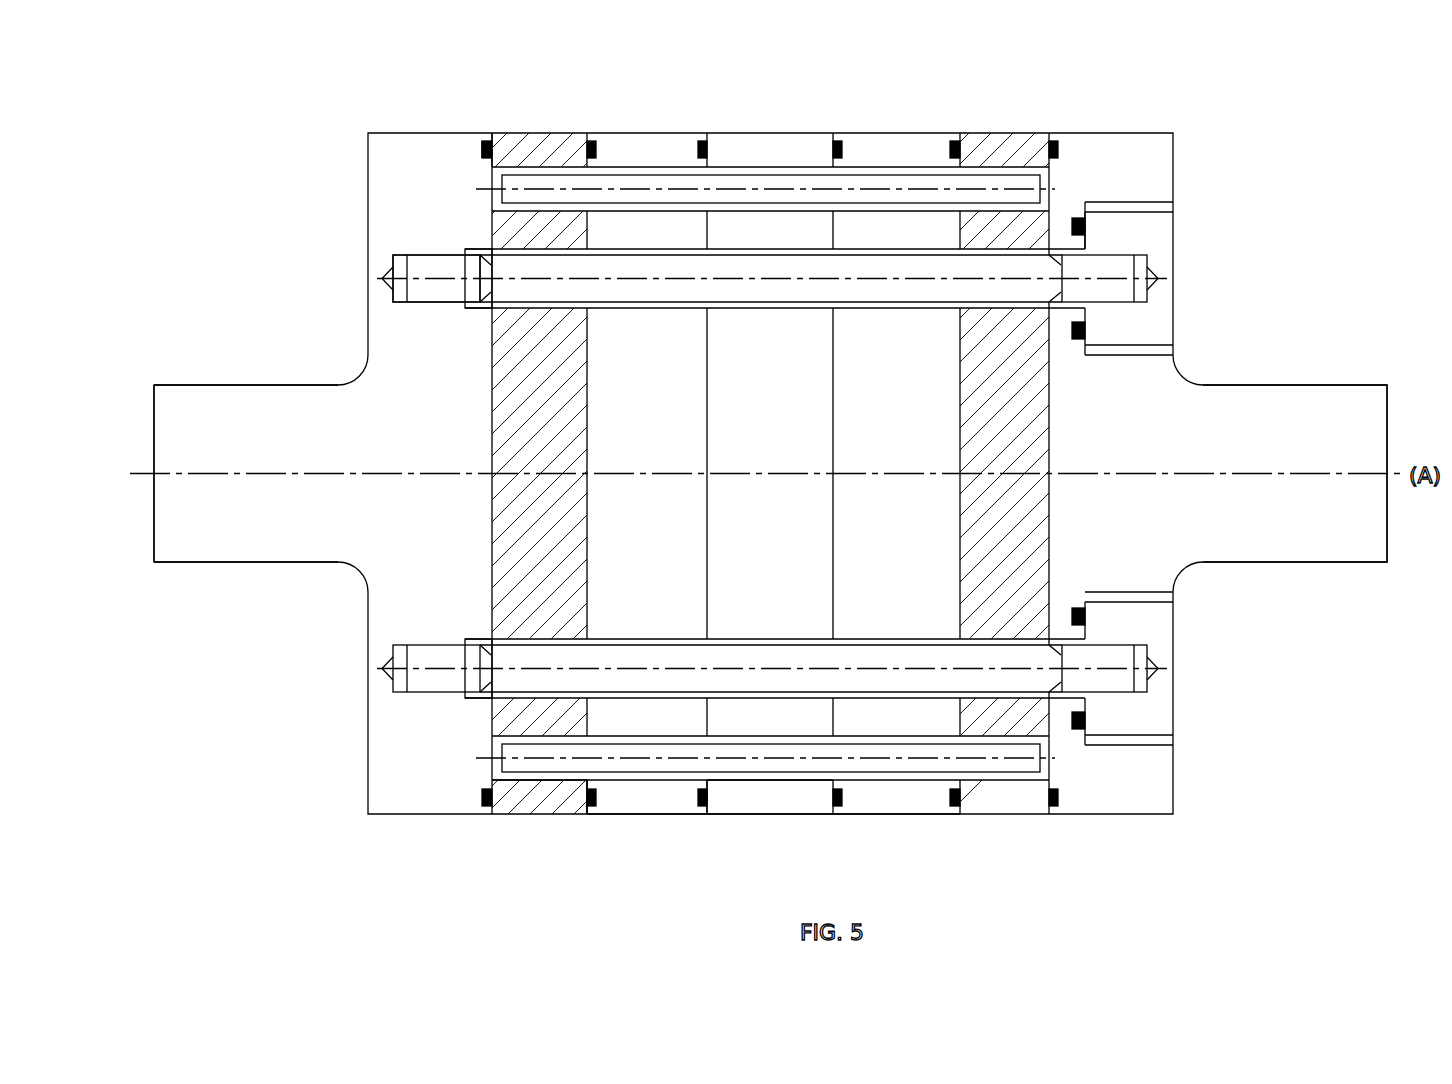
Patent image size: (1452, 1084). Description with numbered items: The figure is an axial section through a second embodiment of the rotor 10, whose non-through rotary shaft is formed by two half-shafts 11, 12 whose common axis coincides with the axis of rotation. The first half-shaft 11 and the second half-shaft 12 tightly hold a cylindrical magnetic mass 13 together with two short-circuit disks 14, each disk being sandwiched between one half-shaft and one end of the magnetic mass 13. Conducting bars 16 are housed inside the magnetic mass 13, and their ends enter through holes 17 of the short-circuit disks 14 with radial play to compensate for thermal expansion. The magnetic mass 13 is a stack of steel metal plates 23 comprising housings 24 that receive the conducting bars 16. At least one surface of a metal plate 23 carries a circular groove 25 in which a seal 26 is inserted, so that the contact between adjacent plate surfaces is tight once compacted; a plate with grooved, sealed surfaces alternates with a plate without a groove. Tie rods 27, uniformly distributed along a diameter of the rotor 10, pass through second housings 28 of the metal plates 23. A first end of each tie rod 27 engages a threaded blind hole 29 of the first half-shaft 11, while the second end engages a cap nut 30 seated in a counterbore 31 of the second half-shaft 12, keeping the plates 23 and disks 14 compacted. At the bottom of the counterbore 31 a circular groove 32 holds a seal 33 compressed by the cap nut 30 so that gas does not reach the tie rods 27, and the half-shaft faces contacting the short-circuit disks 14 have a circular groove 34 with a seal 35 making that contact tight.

The rotor 10 is at (1160, 95).
The first half-shaft 11 is at (280, 373).
The second half-shaft 12 is at (1318, 375).
The cylindrical magnetic mass 13 is at (857, 127).
The short-circuit disk 14 is at (547, 127).
The conducting bar 16 is at (913, 186).
The through hole 17 is at (527, 800).
The metal plate 23 is at (631, 822).
The housing 24 is at (778, 787).
The circular groove 25 is at (592, 817).
The seal 26 is at (603, 803).
The tie rod 27 is at (1047, 254).
The second housing 28 is at (890, 698).
The threaded blind hole 29 is at (431, 254).
The cap nut 30 is at (1157, 325).
The counterbore 31 is at (1165, 201).
The circular groove 32 is at (1085, 217).
The seal 33 is at (1073, 216).
The circular groove 34 is at (488, 132).
The seal 35 is at (472, 140).